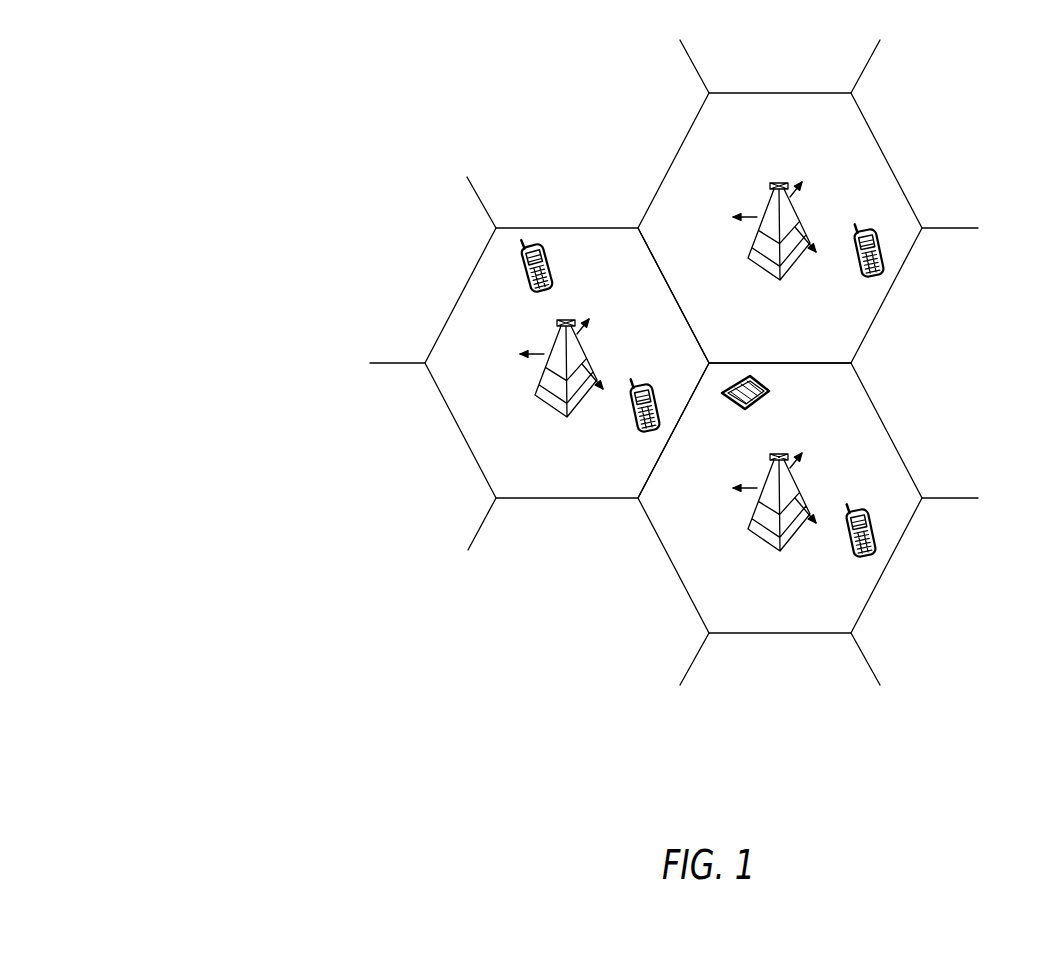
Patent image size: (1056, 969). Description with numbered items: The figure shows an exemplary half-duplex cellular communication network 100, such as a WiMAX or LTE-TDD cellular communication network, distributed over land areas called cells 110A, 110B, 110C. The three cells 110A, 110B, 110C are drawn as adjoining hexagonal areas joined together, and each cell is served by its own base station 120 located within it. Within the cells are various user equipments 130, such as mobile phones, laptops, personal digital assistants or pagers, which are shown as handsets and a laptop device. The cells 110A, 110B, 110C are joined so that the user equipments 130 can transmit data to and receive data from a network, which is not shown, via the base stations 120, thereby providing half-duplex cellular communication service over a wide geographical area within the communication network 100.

The half-duplex cellular communication network 100 is at (575, 394).
The cell 110A is at (885, 152).
The cell 110B is at (885, 412).
The cell 110C is at (457, 427).
The base station 120 is at (752, 240).
The user equipment 130 is at (868, 228).